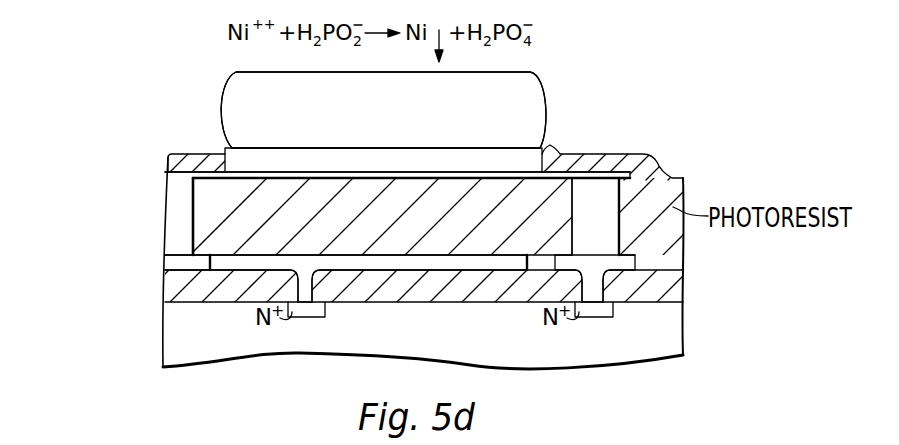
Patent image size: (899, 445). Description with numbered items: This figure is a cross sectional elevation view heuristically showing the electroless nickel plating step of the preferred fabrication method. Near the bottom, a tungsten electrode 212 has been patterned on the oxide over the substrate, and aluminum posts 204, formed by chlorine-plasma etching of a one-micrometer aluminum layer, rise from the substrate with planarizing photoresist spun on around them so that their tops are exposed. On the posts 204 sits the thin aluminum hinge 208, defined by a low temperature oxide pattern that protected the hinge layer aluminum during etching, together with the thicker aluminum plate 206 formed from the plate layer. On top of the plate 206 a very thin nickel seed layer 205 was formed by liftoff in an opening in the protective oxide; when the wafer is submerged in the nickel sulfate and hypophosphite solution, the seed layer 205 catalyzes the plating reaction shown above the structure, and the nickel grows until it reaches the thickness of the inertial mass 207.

The post 204 is at (602, 232).
The seed layer 205 is at (230, 150).
The plate 206 is at (423, 94).
The inertial mass 207 is at (218, 103).
The hinge 208 is at (601, 174).
The electrode 212 is at (253, 262).